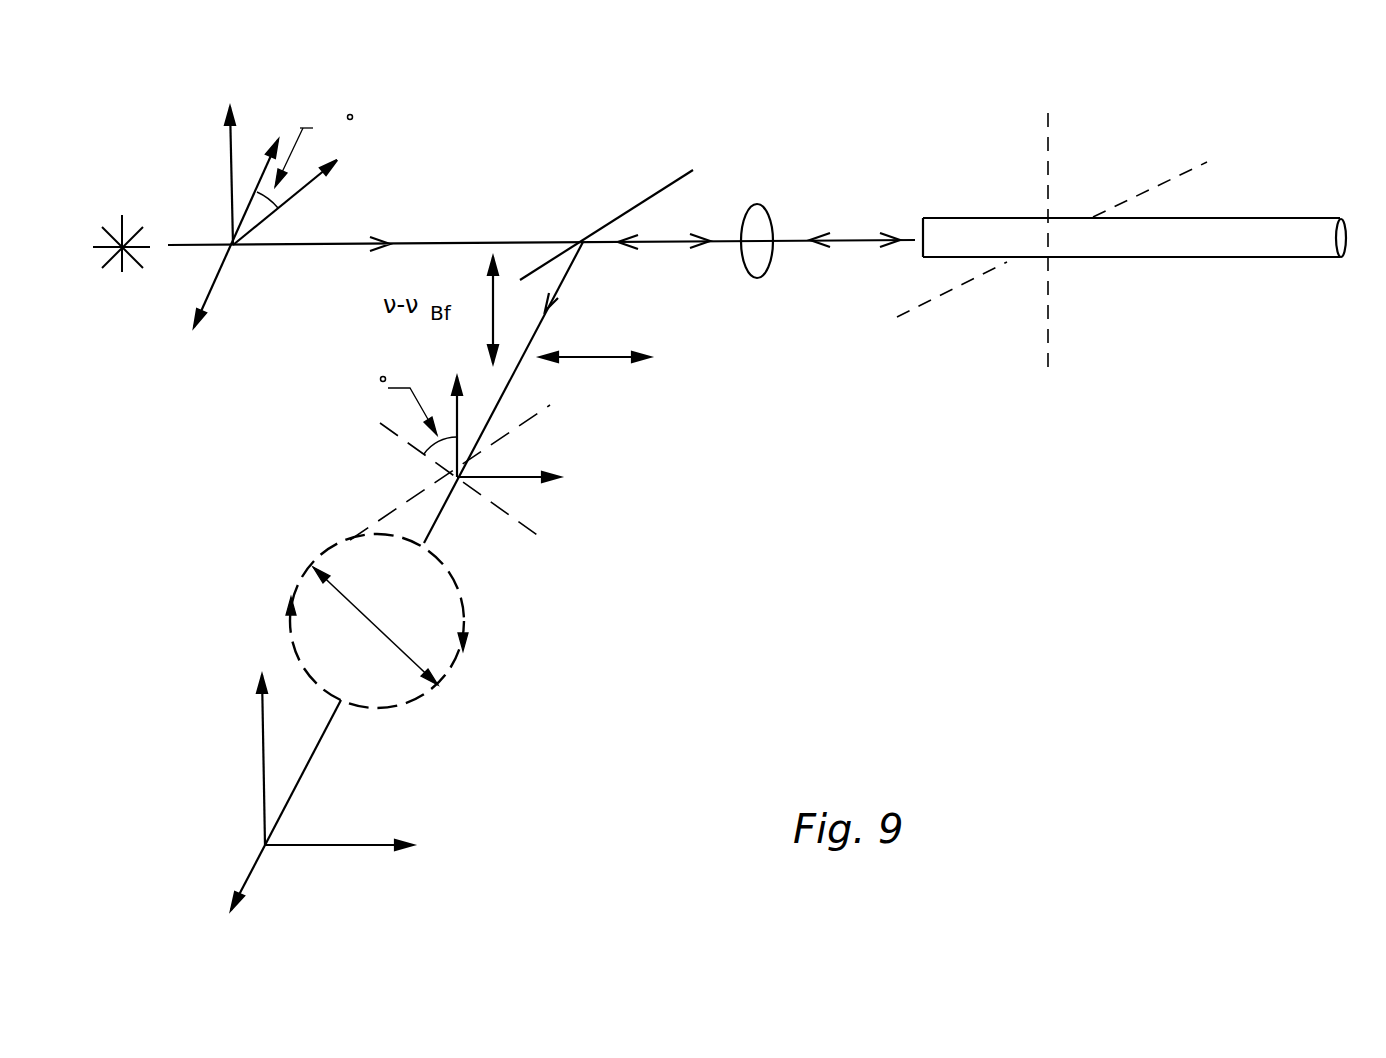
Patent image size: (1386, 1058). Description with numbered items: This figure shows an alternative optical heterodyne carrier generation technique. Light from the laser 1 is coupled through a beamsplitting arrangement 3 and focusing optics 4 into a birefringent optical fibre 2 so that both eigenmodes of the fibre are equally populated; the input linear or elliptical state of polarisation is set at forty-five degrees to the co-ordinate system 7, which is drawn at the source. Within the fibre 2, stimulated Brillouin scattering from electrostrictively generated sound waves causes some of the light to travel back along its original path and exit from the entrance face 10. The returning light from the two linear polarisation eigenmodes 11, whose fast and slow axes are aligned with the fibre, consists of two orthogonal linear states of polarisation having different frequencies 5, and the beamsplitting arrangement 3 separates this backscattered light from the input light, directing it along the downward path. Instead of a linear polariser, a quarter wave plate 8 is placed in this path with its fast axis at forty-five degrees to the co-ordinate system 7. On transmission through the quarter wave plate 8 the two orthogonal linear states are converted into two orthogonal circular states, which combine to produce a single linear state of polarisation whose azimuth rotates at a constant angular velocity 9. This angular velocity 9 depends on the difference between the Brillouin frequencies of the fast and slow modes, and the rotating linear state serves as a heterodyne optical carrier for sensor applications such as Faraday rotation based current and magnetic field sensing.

The laser 1 is at (128, 227).
The birefringent optical fibre 2 is at (1134, 199).
The beamsplitting arrangement 3 is at (606, 184).
The focusing optics 4 is at (769, 205).
The different frequencies 5 is at (607, 367).
The x,y co-ordinate system 7 is at (158, 843).
The quarter wave plate 8 is at (560, 492).
The angular velocity 9 is at (470, 653).
The entrance face 10 is at (875, 260).
The linear polarisation eigenmodes 11 is at (1060, 235).